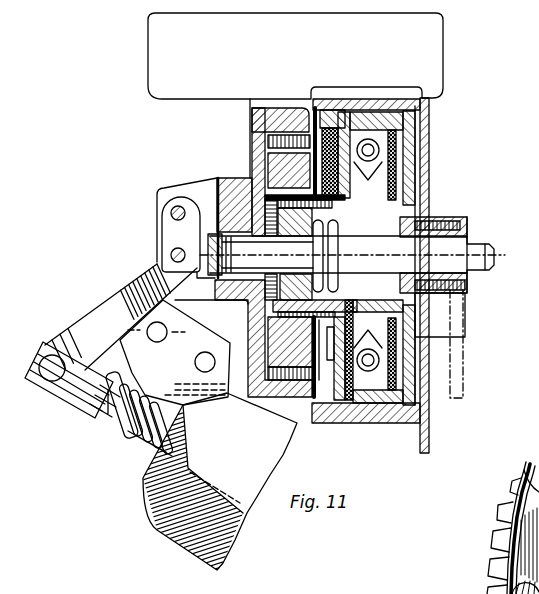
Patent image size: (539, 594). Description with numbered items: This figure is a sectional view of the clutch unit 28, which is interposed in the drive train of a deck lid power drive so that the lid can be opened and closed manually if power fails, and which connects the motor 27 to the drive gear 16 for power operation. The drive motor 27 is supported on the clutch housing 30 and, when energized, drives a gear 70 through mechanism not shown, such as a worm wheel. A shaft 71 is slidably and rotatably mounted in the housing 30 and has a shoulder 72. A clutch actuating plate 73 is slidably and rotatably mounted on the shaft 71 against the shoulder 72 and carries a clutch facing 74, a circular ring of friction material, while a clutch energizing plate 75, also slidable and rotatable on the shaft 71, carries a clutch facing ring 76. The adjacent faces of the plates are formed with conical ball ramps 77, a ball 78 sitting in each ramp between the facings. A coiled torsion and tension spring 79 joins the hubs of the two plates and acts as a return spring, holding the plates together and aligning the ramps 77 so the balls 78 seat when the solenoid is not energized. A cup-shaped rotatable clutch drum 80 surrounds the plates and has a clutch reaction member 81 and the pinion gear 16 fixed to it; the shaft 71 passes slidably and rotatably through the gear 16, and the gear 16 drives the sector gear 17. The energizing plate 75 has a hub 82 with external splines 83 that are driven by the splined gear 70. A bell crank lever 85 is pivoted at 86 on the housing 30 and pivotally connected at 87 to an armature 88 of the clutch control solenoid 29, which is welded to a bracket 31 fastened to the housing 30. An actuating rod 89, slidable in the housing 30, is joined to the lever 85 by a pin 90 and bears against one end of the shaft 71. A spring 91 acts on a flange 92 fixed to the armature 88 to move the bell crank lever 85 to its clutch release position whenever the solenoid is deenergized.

The drive gear 16 is at (458, 217).
The sector gear 17 is at (448, 377).
The drive motor 27 is at (160, 45).
The clutch unit 28 is at (205, 180).
The clutch control solenoid 29 is at (205, 556).
The clutch housing 30 is at (240, 176).
The bracket 31 is at (133, 360).
The gear 70 is at (275, 146).
The shaft 71 is at (496, 258).
The shoulder 72 is at (426, 255).
The clutch actuating plate 73 is at (397, 313).
The clutch facing 74 is at (395, 348).
The clutch energizing plate 75 is at (395, 183).
The clutch facing ring 76 is at (338, 193).
The ball ramps 77 is at (395, 160).
The ball 78 is at (368, 372).
The coiled torsion and tension spring 79 is at (330, 257).
The clutch drum 80 is at (417, 392).
The clutch reaction member 81 is at (305, 408).
The hub 82 is at (286, 240).
The external splines 83 is at (301, 357).
The bell crank lever 85 is at (86, 333).
The pivot 86 is at (170, 212).
The pivotal connection 87 is at (48, 392).
The armature 88 is at (85, 407).
The actuating rod 89 is at (192, 268).
The pin 90 is at (170, 256).
The spring 91 is at (140, 455).
The flange 92 is at (100, 452).